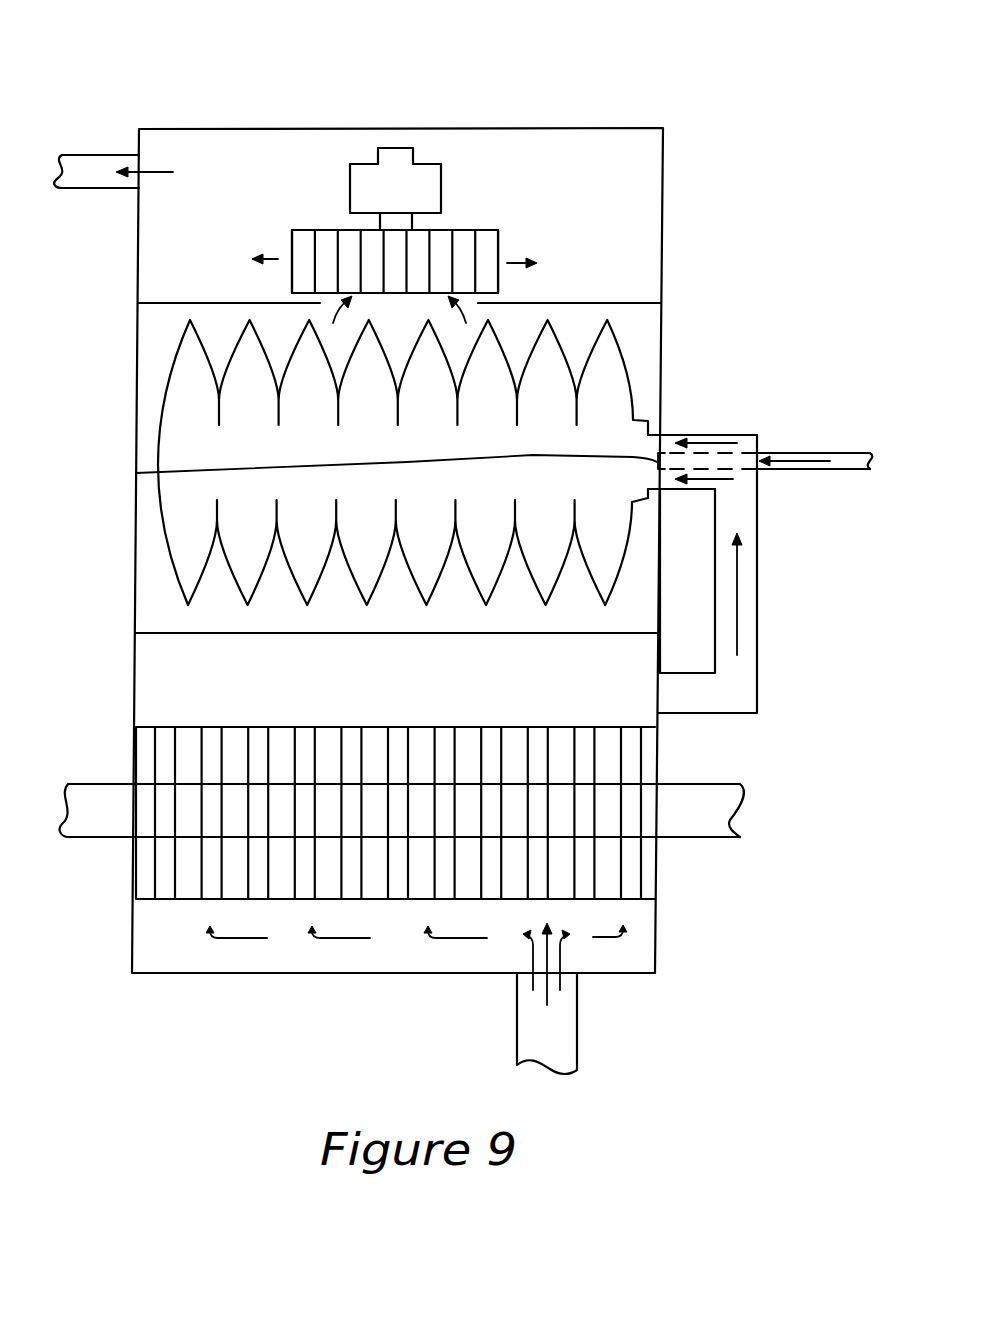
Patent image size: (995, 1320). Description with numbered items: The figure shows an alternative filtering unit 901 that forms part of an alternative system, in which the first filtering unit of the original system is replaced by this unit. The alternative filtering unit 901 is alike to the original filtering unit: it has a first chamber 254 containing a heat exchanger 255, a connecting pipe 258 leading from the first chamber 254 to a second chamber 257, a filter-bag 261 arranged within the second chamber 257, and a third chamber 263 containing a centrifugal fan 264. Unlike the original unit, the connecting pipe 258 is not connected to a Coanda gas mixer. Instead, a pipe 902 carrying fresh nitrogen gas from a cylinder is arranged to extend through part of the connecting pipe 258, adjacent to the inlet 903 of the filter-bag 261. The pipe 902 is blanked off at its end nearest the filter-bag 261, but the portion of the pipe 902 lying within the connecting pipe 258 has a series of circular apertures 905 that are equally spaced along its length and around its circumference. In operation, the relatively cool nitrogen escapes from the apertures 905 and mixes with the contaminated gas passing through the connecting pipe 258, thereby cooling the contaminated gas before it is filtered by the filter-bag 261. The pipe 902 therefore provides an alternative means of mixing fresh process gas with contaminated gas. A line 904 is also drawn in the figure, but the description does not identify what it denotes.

The alternative filtering unit 901 is at (196, 103).
The centrifugal fan 264 is at (462, 247).
The third chamber 263 is at (648, 169).
The filter-bag 261 is at (188, 557).
The coil separator line 904 is at (136, 473).
The second chamber 257 is at (425, 629).
The first chamber 254 is at (425, 697).
The inlet 903 is at (645, 418).
The pipe 902 is at (817, 450).
The circular apertures 905 is at (693, 450).
The connecting pipe 258 is at (757, 640).
The heat exchanger 255 is at (597, 812).